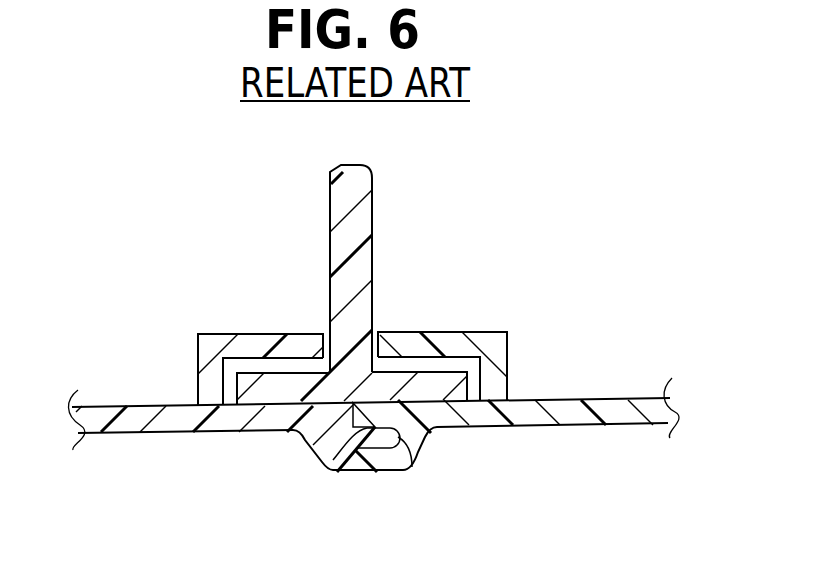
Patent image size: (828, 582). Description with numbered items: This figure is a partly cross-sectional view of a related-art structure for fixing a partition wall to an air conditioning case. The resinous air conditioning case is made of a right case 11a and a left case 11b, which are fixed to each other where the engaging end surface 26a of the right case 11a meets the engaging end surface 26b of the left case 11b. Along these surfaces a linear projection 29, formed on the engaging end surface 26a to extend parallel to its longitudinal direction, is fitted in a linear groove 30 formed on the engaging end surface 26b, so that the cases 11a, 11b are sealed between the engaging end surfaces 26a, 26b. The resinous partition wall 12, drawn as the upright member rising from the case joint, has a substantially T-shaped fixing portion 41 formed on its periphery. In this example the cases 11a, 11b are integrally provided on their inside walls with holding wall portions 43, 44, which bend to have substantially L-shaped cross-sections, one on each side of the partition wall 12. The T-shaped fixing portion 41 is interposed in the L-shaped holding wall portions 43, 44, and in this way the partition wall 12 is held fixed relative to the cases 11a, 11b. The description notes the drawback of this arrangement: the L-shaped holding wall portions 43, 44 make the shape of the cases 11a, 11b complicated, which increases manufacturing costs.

The partition wall 12 is at (372, 213).
The holding wall portion 44 is at (199, 333).
The holding wall portion 43 is at (505, 331).
The T-shaped fixing portion 41 is at (419, 385).
The right case 11a is at (636, 425).
The left case 11b is at (118, 435).
The engaging end surface 26a is at (355, 450).
The engaging end surface 26b is at (357, 490).
The linear projection 29 is at (333, 472).
The linear groove 30 is at (408, 469).